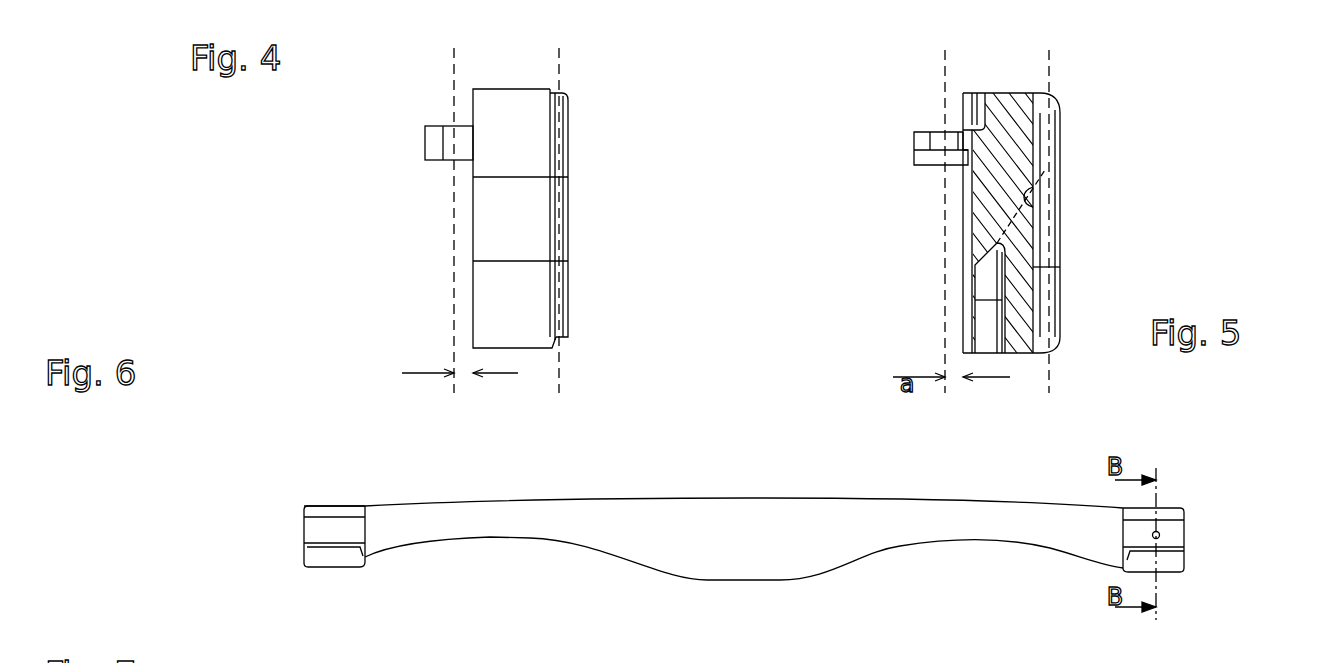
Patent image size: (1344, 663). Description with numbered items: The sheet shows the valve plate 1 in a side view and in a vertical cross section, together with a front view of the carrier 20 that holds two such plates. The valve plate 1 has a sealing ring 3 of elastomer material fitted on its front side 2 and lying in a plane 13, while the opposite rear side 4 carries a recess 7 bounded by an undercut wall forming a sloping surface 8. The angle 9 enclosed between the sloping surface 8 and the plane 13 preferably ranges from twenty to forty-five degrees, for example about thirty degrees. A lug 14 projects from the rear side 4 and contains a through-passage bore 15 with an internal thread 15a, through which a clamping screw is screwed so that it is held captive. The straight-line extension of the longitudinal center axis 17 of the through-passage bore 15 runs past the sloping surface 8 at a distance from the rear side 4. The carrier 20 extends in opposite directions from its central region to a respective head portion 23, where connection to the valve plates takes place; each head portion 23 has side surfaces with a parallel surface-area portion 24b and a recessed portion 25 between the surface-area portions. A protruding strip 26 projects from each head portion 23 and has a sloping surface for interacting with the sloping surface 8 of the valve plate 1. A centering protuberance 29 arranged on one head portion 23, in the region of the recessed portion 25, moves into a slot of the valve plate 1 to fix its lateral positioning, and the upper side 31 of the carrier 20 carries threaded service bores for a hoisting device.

In FIG. 4, the valve plate 1 is at (473, 211).
In FIG. 5, the front side 2 is at (1047, 280).
In FIG. 4, the sealing ring 3 is at (560, 127).
In FIG. 5, the sealing ring 3 is at (1052, 138).
In FIG. 4, the rear side 4 is at (472, 228).
In FIG. 5, the rear side 4 is at (962, 253).
In FIG. 5, the recess 7 is at (993, 315).
In FIG. 5, the sloping surface 8 is at (1008, 258).
In FIG. 5, the angle 9 is at (1040, 195).
In FIG. 4, the plane 13 is at (560, 70).
In FIG. 5, the plane 13 is at (1052, 73).
In FIG. 4, the lug 14 is at (448, 143).
In FIG. 5, the lug 14 is at (922, 142).
In FIG. 5, the through-passage bore 15 is at (937, 138).
In FIG. 5, the internal thread 15a is at (962, 133).
In FIG. 5, the longitudinal center axis 17 is at (943, 213).
In FIG. 6, the carrier 20 is at (280, 580).
In FIG. 6, the head portion 23 is at (755, 533).
In FIG. 6, the surface-area portion 24b is at (315, 510).
In FIG. 6, the recessed portion 25 is at (288, 499).
In FIG. 6, the protruding strip 26 is at (347, 555).
In FIG. 6, the centering protuberance 29 is at (1160, 535).
In FIG. 6, the upper side 31 is at (330, 505).